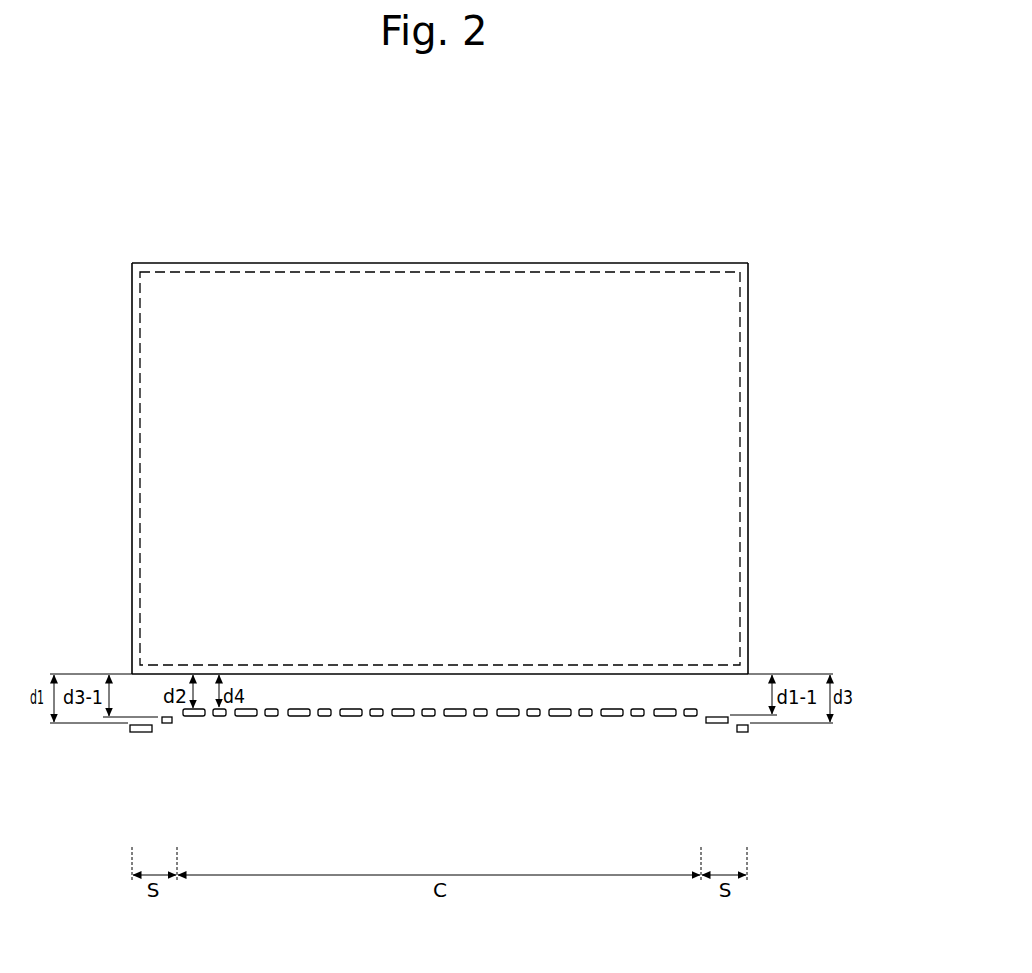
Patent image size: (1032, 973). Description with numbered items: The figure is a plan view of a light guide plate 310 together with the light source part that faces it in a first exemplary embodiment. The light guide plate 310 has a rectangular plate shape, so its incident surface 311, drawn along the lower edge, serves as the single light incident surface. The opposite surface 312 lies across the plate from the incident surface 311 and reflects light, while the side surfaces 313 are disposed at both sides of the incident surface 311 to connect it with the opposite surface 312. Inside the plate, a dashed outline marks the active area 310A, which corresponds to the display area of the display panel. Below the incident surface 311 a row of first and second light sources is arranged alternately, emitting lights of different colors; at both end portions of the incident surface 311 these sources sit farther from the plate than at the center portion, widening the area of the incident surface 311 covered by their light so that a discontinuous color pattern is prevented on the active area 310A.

The light guide plate 310 is at (691, 261).
The active area 310A is at (591, 271).
The incident surface 311 is at (432, 676).
The opposite surface 312 is at (487, 262).
The side surfaces 313 is at (750, 468).